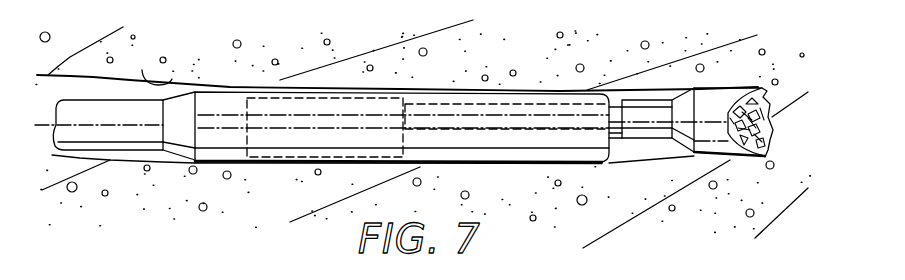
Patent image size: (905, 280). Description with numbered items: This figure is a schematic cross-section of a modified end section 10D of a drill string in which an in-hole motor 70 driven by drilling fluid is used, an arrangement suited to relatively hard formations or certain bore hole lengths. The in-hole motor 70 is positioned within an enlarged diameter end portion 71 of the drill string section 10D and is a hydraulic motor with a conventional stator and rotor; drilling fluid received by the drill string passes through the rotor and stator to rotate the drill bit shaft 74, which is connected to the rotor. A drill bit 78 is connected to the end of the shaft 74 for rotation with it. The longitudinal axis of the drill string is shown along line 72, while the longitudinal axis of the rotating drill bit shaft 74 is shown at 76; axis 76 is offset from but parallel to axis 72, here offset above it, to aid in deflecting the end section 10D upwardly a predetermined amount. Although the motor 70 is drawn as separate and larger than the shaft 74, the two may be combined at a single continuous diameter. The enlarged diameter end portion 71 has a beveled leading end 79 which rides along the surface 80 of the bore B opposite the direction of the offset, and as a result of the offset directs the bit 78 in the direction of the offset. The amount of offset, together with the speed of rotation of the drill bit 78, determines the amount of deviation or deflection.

The end section 10D is at (453, 92).
The in-hole motor 70 is at (306, 94).
The enlarged diameter end portion 71 is at (452, 150).
The longitudinal axis of the drill string 72 is at (127, 128).
The drill bit shaft 74 is at (548, 108).
The longitudinal axis of the drill bit shaft 76 is at (576, 118).
The drill bit 78 is at (724, 97).
The beveled leading end 79 is at (609, 141).
The surface of bore 80 is at (573, 160).
The bore B is at (142, 70).